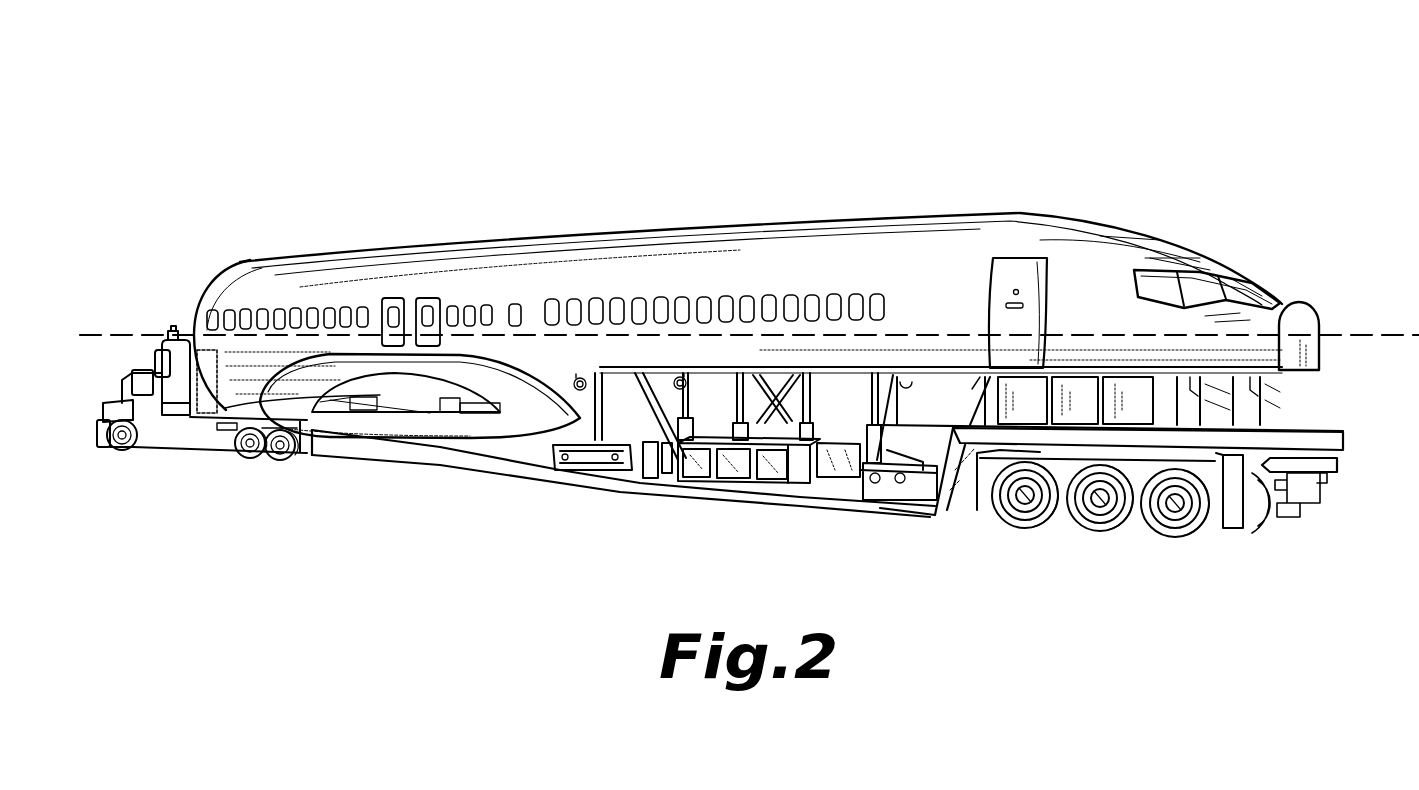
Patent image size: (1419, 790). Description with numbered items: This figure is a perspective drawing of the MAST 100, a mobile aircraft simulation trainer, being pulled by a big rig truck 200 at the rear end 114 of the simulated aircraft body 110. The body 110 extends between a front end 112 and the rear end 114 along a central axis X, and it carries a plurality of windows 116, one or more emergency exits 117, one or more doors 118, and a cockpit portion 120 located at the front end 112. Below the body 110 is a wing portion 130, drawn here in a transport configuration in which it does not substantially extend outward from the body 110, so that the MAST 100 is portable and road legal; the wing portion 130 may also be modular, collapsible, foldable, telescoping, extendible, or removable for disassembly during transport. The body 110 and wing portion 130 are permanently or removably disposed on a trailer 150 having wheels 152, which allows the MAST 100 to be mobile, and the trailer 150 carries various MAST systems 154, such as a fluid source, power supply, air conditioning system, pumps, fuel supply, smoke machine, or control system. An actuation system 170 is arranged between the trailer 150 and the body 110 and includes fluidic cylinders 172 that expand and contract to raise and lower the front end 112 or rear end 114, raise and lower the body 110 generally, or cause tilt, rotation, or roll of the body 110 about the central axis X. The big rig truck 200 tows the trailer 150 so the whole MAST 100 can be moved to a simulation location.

The MAST 100 is at (862, 128).
The simulated aircraft body 110 is at (368, 215).
The front end 112 is at (1322, 322).
The rear end 114 is at (230, 275).
The windows 116 is at (590, 297).
The emergency exits 117 is at (430, 292).
The doors 118 is at (985, 320).
The cockpit portion 120 is at (1250, 257).
The wing portion 130 is at (476, 452).
The trailer 150 is at (1338, 423).
The wheels 152 is at (968, 505).
The MAST systems 154 is at (1160, 397).
The actuation system 170 is at (703, 436).
The fluidic cylinders 172 is at (748, 386).
The big rig truck 200 is at (129, 357).